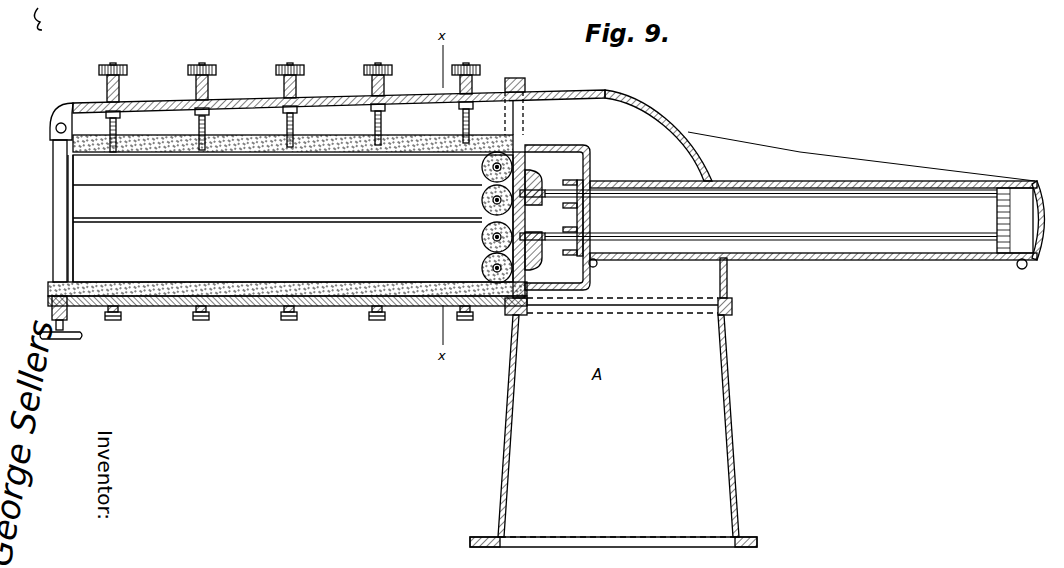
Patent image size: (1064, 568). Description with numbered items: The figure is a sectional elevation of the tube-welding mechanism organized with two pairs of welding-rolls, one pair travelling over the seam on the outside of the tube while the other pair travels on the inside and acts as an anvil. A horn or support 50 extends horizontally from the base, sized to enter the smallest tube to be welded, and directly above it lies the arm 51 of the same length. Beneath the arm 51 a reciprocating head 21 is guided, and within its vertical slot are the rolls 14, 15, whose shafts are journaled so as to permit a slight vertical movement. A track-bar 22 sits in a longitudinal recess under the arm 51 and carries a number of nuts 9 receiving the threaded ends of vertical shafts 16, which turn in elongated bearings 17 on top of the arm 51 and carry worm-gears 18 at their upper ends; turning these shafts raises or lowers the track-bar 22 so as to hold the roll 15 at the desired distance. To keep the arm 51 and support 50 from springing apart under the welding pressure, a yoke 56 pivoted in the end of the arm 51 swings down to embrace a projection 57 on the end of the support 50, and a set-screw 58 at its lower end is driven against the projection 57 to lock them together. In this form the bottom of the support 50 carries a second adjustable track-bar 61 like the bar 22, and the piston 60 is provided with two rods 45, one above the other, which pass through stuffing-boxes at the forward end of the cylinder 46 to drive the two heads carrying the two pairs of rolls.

The nuts 9 is at (117, 127).
The roll 14 is at (481, 168).
The roll 15 is at (481, 201).
The vertical shafts 16 is at (209, 113).
The elongated bearings 17 is at (119, 88).
The worm-gears 18 is at (119, 66).
The reciprocating head 21 is at (528, 185).
The track-bar 22 is at (322, 152).
The rod 45 is at (651, 195).
The cylinder 46 is at (910, 258).
The horn or support 50 is at (290, 218).
The arm 51 is at (318, 97).
The yoke 56 is at (54, 188).
The projection 57 is at (52, 302).
The set-screw 58 is at (50, 333).
The piston 60 is at (997, 218).
The adjustable track-bar 61 is at (346, 306).